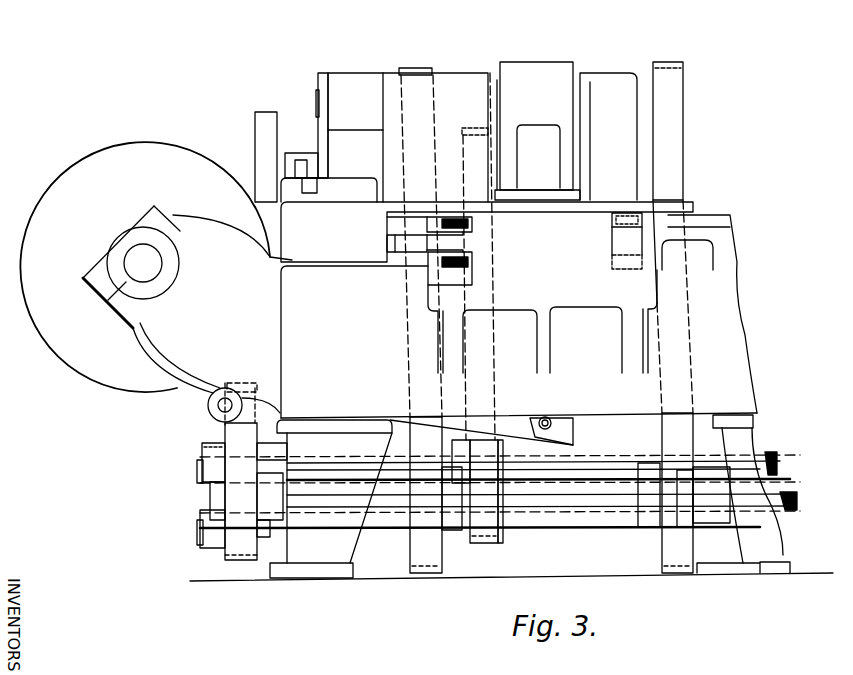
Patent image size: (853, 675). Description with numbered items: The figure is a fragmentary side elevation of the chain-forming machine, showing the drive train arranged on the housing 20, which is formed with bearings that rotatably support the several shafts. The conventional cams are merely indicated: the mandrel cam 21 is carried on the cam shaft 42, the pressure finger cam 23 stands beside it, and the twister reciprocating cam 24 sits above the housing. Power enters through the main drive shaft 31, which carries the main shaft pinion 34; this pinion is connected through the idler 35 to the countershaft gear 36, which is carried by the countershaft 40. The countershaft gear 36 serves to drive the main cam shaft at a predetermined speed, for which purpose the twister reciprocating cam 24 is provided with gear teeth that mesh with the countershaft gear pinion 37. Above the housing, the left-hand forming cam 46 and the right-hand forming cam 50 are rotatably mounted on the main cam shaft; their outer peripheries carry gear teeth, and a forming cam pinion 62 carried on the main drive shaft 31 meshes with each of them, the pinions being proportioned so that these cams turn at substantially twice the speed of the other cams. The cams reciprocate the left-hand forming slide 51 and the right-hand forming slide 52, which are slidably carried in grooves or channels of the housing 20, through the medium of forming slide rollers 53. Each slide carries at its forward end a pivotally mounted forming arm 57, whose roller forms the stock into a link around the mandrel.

The housing 20 is at (747, 385).
The mandrel cam 21 is at (78, 163).
The pressure finger cam 23 is at (262, 142).
The twister reciprocating cam 24 is at (480, 173).
The main drive shaft 31 is at (207, 501).
The main shaft pinion 34 is at (237, 494).
The idler 35 is at (240, 548).
The countershaft gear 36 is at (230, 436).
The countershaft gear pinion 37 is at (490, 530).
The countershaft 40 is at (202, 468).
The cam shaft 42 is at (140, 262).
The left-hand forming cam 46 is at (417, 68).
The right-hand forming cam 50 is at (668, 65).
The left-hand forming slide 51 is at (468, 252).
The right-hand forming slide 52 is at (612, 244).
The forming slide roller 53 is at (460, 263).
The forming arm 57 is at (458, 220).
The forming cam pinion 62 is at (430, 559).